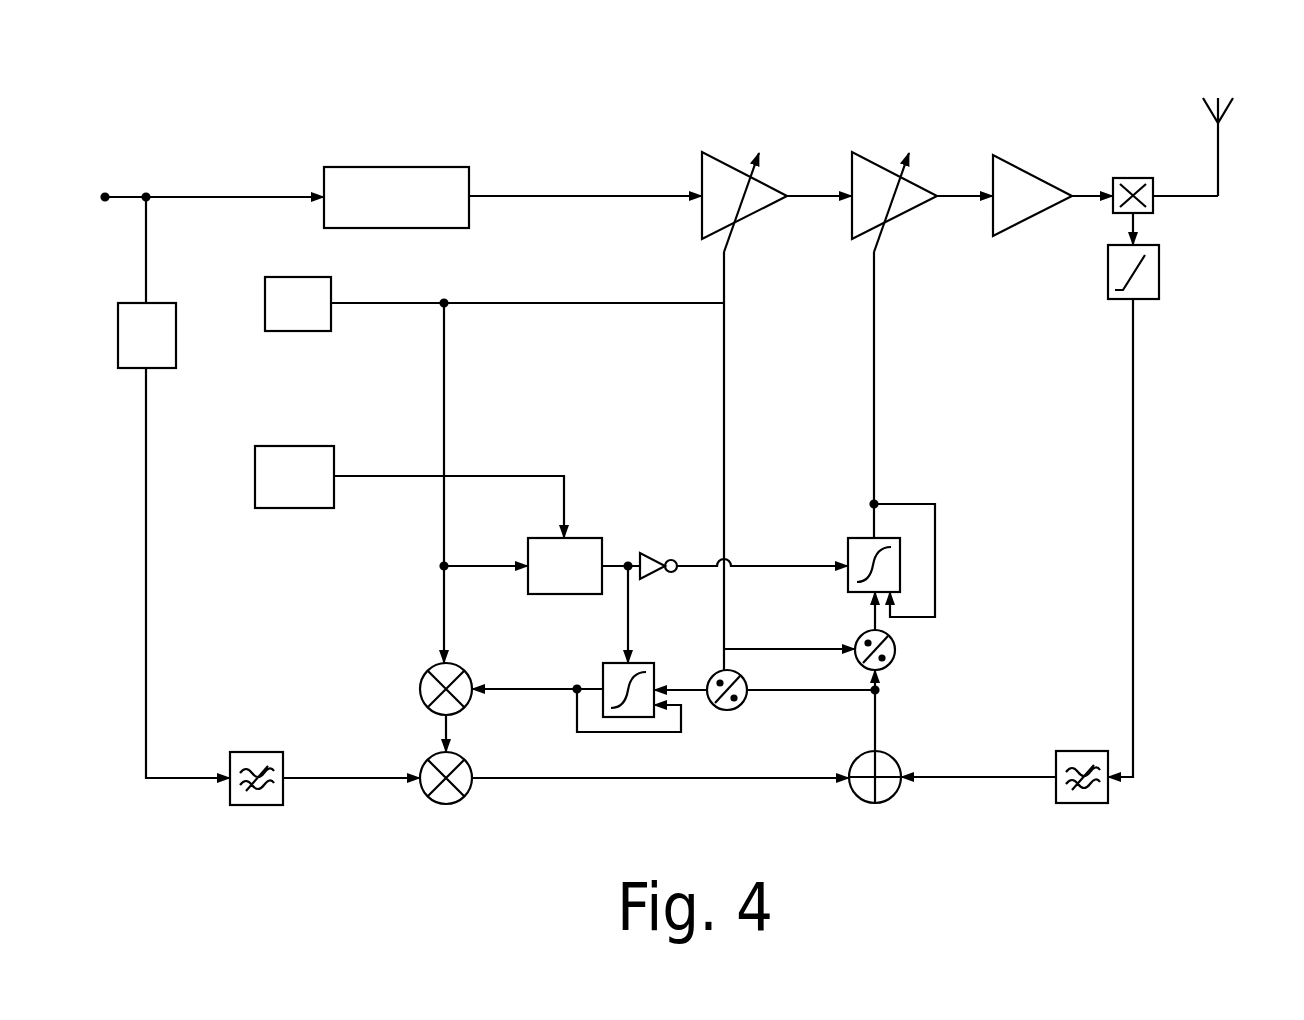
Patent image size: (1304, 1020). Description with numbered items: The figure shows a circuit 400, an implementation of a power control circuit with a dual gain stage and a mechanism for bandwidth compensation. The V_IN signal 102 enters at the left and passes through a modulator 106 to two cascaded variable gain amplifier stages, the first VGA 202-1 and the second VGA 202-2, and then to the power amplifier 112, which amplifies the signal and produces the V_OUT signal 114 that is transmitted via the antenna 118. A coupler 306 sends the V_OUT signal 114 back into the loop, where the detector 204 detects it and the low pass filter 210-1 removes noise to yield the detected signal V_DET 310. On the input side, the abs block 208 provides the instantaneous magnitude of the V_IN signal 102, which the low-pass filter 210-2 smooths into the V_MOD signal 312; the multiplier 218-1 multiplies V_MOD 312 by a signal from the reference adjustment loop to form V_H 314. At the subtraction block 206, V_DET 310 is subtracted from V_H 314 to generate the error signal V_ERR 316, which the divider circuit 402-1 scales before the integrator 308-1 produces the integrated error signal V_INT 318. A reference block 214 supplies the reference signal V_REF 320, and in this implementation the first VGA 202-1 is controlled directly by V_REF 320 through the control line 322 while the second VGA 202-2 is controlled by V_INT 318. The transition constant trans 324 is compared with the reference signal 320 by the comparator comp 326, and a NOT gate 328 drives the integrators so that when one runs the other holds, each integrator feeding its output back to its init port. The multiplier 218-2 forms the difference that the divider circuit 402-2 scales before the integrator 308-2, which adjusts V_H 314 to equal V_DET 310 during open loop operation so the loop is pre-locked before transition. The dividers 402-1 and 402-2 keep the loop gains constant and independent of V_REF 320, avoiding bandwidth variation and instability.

The circuit 400 is at (655, 112).
The V_IN signal 102 is at (133, 194).
The modulator 106 is at (513, 197).
The abs block 208 is at (174, 487).
The VGA-1 202-1 is at (724, 158).
The VGA-2 202-2 is at (874, 158).
The power amplifier 112 is at (1053, 195).
The coupler 306 is at (1133, 178).
The V_OUT signal 114 is at (1202, 194).
The antenna 118 is at (1225, 126).
The detector 204 is at (1159, 267).
The reference 214 is at (298, 304).
The V_REF reference signal 320 is at (387, 303).
The V_CNTRL control signal 322 is at (724, 273).
The V_INT integrated error signal 318 is at (874, 404).
The trans 324 is at (409, 492).
The comp 326 is at (584, 600).
The NOT gate 328 is at (652, 549).
The integrator 308-1 is at (862, 538).
The integrator 308-2 is at (650, 663).
The multiplier 218-2 is at (425, 683).
The multiplier 218-1 is at (452, 803).
The V_MOD signal 312 is at (327, 778).
The V_H 314 is at (660, 777).
The V_ERR error signal 316 is at (875, 740).
The V_DET detected signal 310 is at (955, 777).
The subtraction block 206 is at (878, 803).
The divider circuit 402-1 is at (893, 660).
The divider circuit 402-2 is at (735, 709).
The low pass filter 210-1 is at (1080, 803).
The low-pass filter 210-2 is at (258, 805).